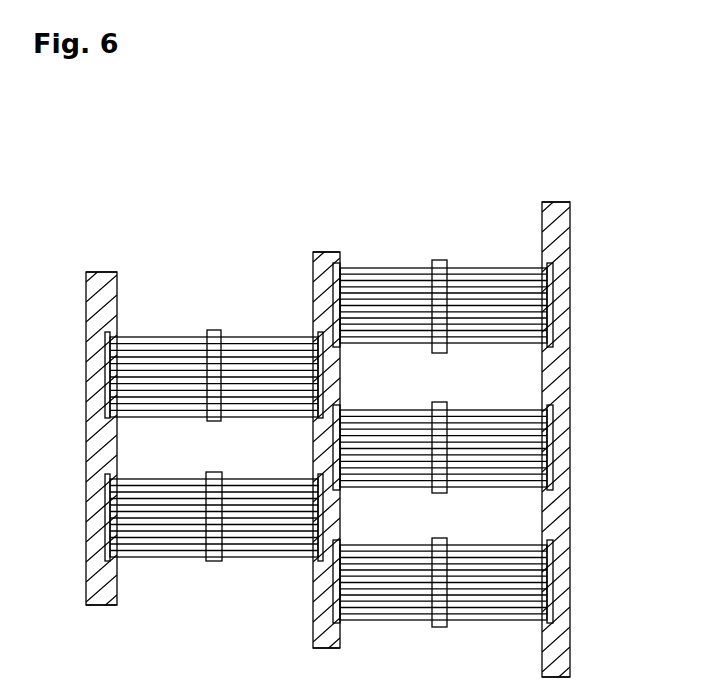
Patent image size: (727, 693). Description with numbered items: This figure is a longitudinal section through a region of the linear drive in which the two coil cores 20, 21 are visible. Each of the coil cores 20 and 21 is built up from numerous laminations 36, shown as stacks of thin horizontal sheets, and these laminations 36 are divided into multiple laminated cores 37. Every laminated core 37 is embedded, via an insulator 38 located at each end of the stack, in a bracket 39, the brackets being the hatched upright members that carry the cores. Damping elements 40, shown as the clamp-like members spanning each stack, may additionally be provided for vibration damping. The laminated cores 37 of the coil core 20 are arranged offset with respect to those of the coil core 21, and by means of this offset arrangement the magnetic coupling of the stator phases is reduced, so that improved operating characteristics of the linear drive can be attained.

The coil core 20 is at (170, 284).
The coil core 21 is at (422, 236).
The laminations 36 is at (257, 347).
The laminated core 37 is at (88, 370).
The insulator 38 is at (105, 344).
The bracket 39 is at (105, 270).
The damping element 40 is at (215, 330).